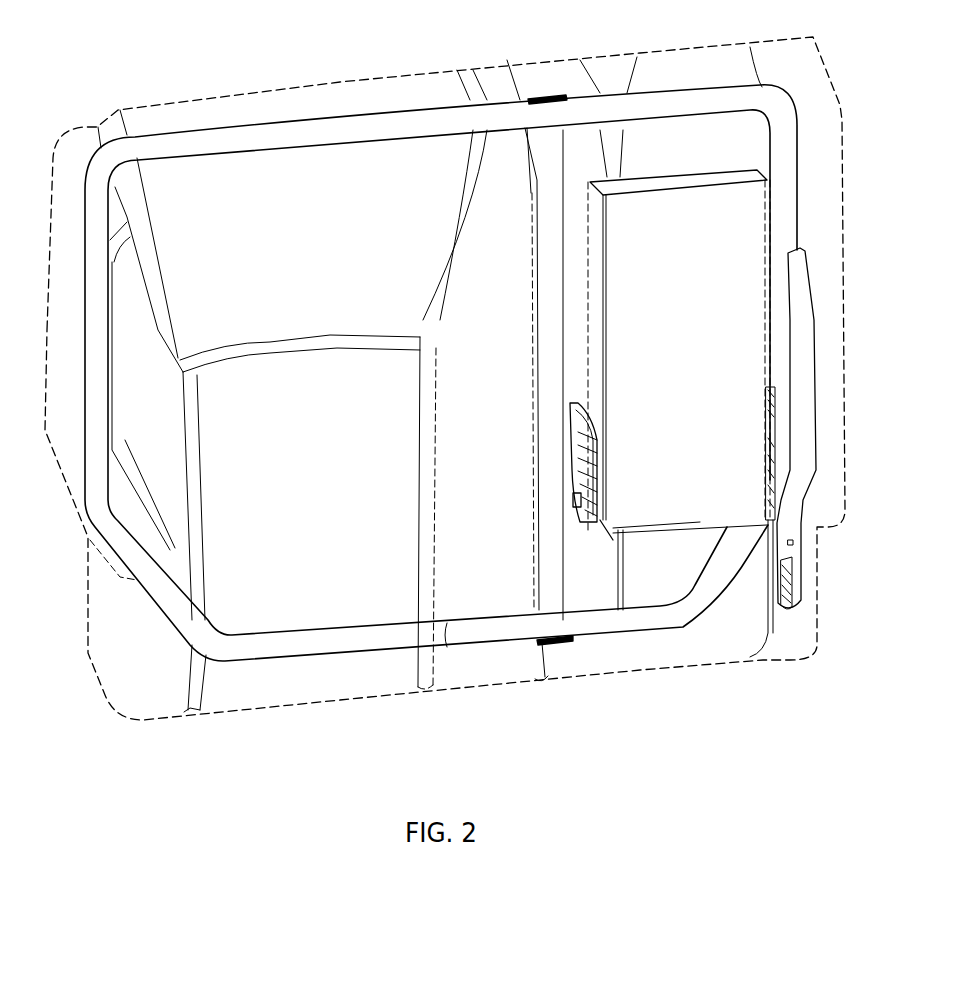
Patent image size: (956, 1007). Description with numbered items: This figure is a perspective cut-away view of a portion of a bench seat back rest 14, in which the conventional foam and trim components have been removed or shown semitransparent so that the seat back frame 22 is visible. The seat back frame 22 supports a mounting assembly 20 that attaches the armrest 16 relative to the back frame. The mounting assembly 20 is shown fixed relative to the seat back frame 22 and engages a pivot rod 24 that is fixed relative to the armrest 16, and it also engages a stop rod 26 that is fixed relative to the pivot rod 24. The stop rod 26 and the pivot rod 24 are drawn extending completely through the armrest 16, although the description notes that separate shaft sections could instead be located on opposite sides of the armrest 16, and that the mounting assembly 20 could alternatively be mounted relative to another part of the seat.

The back rest 14 is at (285, 254).
The armrest 16 is at (706, 339).
The mounting assembly 20 is at (766, 481).
The seat back frame 22 is at (328, 130).
The pivot rod 24 is at (587, 483).
The stop rod 26 is at (573, 500).